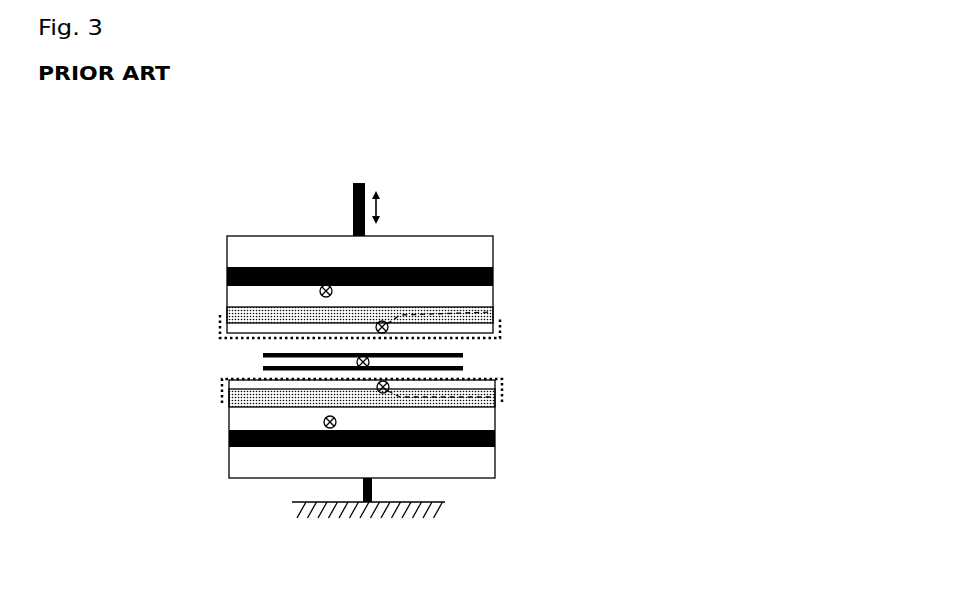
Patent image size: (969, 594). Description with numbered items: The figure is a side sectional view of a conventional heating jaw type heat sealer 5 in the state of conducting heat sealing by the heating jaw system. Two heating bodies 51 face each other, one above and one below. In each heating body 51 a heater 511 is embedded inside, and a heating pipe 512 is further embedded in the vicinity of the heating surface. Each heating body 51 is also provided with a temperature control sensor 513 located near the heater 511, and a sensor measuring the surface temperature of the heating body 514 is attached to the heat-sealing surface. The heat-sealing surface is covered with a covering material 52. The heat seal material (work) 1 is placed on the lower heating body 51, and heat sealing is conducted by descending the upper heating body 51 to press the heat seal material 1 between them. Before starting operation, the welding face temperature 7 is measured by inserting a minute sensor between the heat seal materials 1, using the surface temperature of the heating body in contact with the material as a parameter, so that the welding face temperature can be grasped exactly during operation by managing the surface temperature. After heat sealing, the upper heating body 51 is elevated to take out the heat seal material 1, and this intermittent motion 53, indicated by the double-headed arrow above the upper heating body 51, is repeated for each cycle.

The heating jaw type heat sealer 5 is at (453, 327).
The heating body 51 is at (483, 242).
The heater 511 is at (240, 268).
The heating pipe 512 is at (233, 317).
The temperature control sensor 513 is at (227, 505).
The sensor measuring the surface temperature of the heating body 514 is at (495, 313).
The covering material 52 is at (507, 385).
The intermittent motion 53 is at (471, 204).
The heat seal material (work) 1 is at (258, 362).
The welding face temperature 7 is at (369, 356).